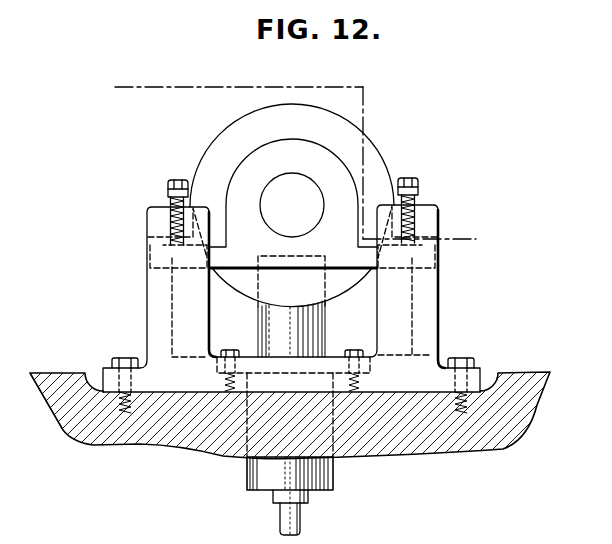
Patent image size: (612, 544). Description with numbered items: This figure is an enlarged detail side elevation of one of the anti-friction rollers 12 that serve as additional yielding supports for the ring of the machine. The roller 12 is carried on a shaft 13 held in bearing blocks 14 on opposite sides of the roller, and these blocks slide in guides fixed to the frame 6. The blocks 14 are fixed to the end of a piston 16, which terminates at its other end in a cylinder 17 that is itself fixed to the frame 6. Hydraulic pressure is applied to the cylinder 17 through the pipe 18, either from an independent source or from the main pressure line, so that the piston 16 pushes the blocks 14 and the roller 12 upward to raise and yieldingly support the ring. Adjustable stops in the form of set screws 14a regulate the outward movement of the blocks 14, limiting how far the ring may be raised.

The frame 6 is at (420, 440).
The anti-friction roller 12 is at (257, 110).
The shaft 13 is at (115, 78).
The bearing block 14 is at (343, 182).
The set screw 14a is at (176, 176).
The piston 16 is at (312, 325).
The cylinder 17 is at (325, 474).
The pipe 18 is at (298, 521).